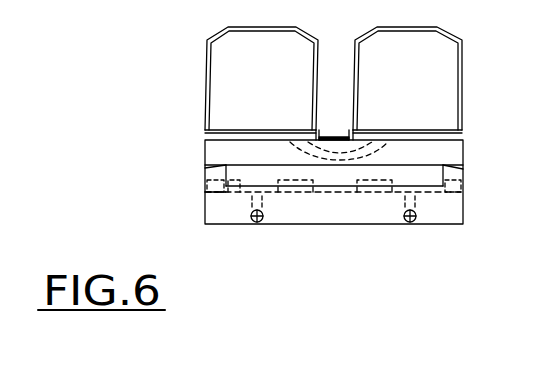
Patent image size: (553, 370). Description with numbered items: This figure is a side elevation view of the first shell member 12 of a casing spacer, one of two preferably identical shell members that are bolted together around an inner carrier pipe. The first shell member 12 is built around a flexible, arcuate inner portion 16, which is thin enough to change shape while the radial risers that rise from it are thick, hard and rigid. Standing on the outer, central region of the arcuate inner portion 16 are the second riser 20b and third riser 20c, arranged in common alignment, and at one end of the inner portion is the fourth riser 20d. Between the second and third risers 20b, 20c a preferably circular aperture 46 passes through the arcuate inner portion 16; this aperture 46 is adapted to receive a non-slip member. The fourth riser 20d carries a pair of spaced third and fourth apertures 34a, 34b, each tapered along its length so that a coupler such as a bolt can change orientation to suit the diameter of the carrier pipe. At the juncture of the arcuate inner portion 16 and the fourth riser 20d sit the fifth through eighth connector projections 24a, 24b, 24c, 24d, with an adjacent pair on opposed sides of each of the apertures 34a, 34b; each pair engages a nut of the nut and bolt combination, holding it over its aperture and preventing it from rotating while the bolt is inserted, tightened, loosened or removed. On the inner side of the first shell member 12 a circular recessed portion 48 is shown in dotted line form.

The first shell member 12 is at (190, 100).
The flexible, arcuate inner portion 16 is at (452, 158).
The second riser 20b is at (286, 83).
The third riser 20c is at (430, 85).
The fourth riser 20d is at (408, 177).
The fifth connector projection 24a is at (205, 200).
The sixth connector projection 24b is at (300, 193).
The seventh connector projection 24c is at (375, 193).
The eighth connector projection 24d is at (463, 190).
The third aperture 34a is at (255, 224).
The fourth aperture 34b is at (415, 225).
The circular aperture 46 is at (315, 158).
The circular recessed portion 48 is at (340, 150).